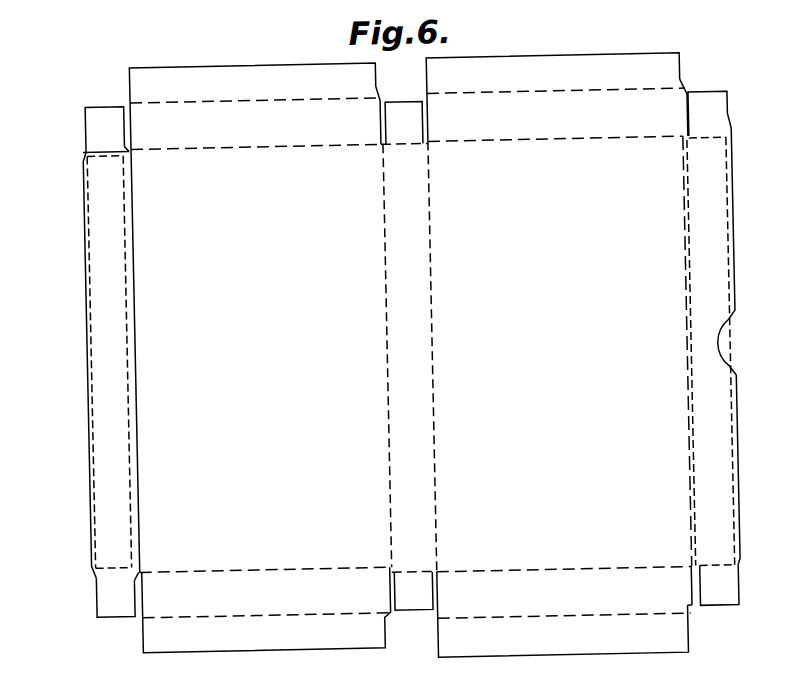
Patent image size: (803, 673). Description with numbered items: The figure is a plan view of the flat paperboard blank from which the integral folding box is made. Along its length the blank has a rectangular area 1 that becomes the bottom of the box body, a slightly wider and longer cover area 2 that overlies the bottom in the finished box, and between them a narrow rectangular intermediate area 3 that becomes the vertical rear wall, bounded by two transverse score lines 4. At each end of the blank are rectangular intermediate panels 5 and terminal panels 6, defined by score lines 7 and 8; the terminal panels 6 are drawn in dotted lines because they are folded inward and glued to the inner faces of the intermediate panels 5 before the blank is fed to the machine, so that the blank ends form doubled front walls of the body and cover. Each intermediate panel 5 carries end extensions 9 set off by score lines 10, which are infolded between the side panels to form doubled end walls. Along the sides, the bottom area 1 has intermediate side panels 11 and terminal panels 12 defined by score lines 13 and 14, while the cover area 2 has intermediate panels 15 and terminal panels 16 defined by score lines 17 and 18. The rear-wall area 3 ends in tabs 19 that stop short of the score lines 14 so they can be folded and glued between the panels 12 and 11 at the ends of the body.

The rectangular area 1 is at (178, 554).
The cover area 2 is at (646, 522).
The rectangular intermediate area 3 is at (423, 432).
The score lines 4 is at (386, 398).
The intermediate panels 5 is at (101, 516).
The terminal panels 6 is at (101, 490).
The score lines 7 is at (137, 467).
The score lines 8 is at (86, 450).
The end extensions 9 is at (89, 128).
The score lines 10 is at (104, 149).
The intermediate side panels 11 is at (146, 114).
The terminal panels 12 is at (172, 73).
The score lines 13 is at (229, 146).
The score lines 14 is at (235, 100).
The intermediate panels 15 is at (677, 108).
The terminal panels 16 is at (564, 66).
The score lines 17 is at (572, 142).
The score lines 18 is at (576, 94).
The end tabs 19 is at (406, 105).